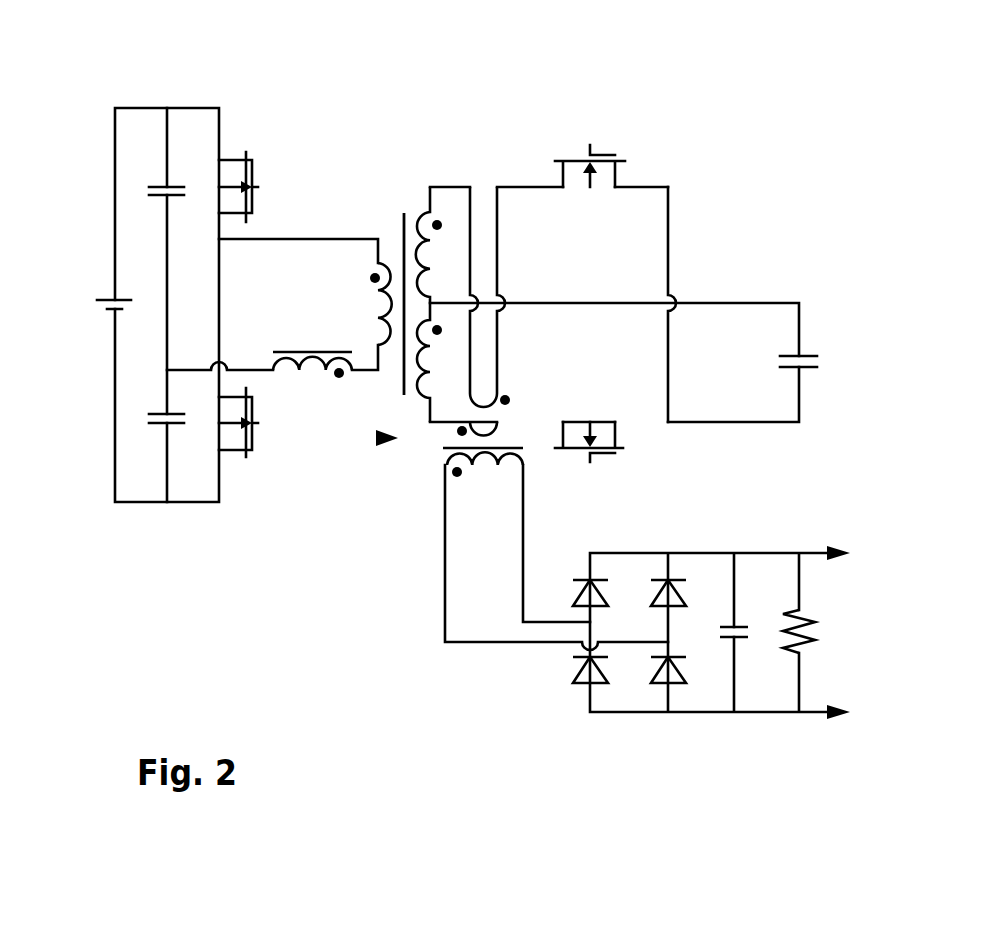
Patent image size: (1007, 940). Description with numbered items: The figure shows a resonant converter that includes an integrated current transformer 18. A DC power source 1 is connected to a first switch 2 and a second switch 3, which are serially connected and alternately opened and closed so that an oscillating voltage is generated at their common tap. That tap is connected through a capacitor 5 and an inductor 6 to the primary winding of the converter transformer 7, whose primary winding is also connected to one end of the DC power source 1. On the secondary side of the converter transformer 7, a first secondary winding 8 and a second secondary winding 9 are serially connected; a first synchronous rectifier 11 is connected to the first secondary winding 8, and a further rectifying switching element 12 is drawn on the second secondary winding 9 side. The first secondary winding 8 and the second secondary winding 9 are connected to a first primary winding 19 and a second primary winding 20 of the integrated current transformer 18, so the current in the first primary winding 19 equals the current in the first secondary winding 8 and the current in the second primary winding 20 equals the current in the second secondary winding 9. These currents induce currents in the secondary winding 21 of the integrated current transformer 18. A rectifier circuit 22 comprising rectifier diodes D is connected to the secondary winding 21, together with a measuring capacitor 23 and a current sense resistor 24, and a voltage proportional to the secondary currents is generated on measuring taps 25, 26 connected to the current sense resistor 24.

The DC power source 1 is at (78, 297).
The first switch 2 is at (215, 170).
The second switch 3 is at (218, 436).
The capacitor 5 is at (145, 188).
The inductor 6 is at (318, 335).
The converter transformer 7 is at (388, 222).
The first secondary winding 8 is at (427, 257).
The second secondary winding 9 is at (438, 363).
The first synchronous rectifier 11 is at (605, 148).
The second rectifying switching element 12 is at (612, 462).
The integrated current transformer 18 is at (376, 438).
The first primary winding 19 is at (473, 402).
The second primary winding 20 is at (455, 433).
The secondary winding 21 is at (483, 460).
The rectifier circuit 22 is at (615, 735).
The measuring capacitor 23 is at (718, 735).
The current sense resistor 24 is at (786, 735).
The measuring tap 25 is at (837, 543).
The measuring tap 26 is at (833, 718).